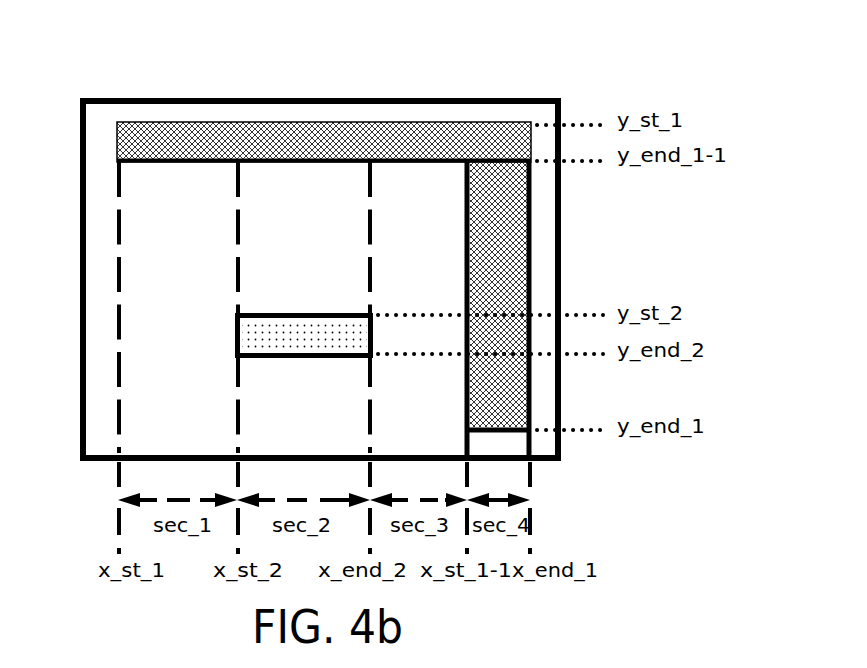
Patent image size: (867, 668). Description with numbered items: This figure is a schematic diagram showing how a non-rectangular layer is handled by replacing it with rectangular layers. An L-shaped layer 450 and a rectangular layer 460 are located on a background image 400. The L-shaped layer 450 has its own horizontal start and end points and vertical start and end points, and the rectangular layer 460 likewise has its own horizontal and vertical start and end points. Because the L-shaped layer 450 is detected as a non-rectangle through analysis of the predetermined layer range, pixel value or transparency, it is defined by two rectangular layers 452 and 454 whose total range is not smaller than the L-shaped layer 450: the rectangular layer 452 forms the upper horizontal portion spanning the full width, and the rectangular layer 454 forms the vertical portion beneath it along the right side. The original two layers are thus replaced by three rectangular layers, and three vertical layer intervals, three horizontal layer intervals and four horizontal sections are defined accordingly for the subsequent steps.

The background image 400 is at (128, 96).
The L-shaped layer 450 is at (379, 247).
The rectangular layer 452 is at (423, 143).
The rectangular layer 454 is at (508, 238).
The rectangular layer 460 is at (257, 335).